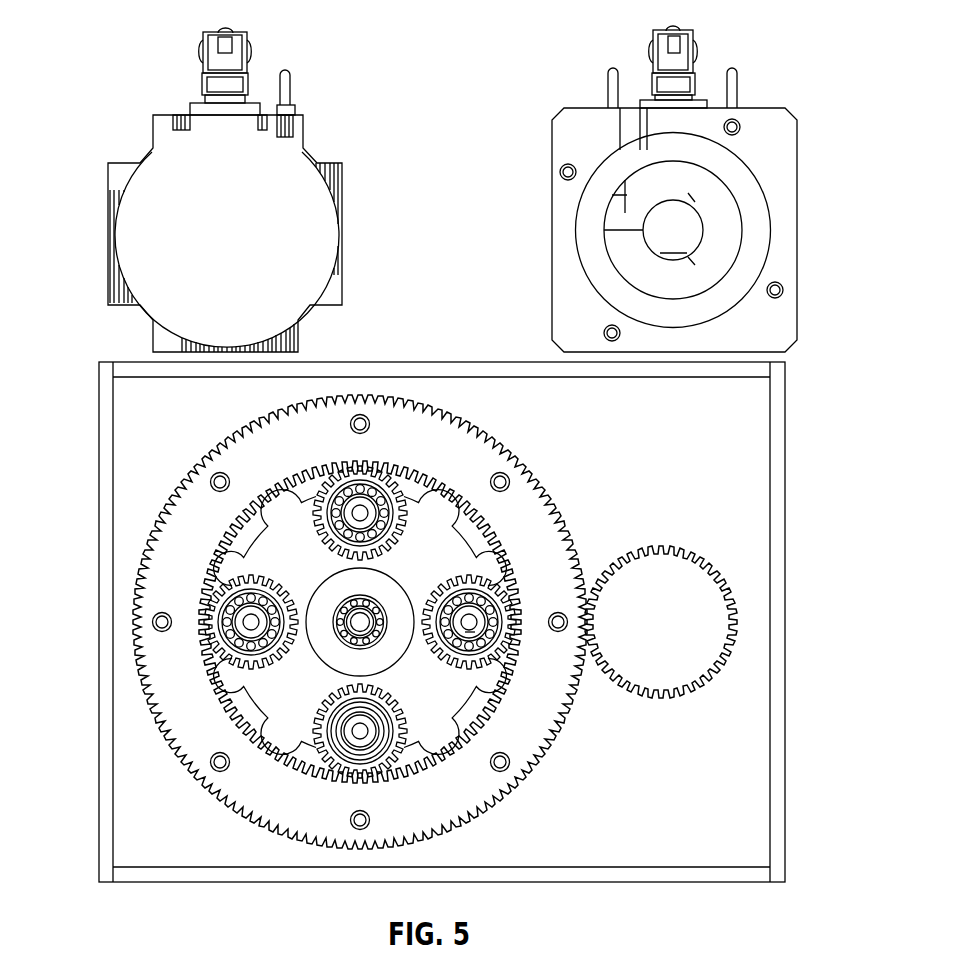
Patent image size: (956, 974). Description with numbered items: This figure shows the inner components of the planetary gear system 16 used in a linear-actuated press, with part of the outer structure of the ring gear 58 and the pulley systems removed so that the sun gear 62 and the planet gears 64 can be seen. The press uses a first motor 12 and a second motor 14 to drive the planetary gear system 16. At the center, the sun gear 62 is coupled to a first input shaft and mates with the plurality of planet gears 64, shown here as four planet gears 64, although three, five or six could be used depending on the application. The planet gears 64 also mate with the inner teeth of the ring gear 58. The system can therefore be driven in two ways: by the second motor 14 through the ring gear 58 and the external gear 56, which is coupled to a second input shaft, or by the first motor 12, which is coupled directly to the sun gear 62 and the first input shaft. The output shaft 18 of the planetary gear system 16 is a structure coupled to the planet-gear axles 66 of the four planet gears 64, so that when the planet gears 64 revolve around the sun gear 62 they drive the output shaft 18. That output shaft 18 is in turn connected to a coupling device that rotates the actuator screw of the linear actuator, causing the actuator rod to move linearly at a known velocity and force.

The first motor 12 is at (157, 153).
The second motor 14 is at (740, 213).
The planetary gear system 16 is at (172, 488).
The output shaft 18 is at (443, 698).
The external gear 56 is at (712, 600).
The ring gear 58 is at (177, 657).
The sun gear 62 is at (340, 653).
The planet gears 64 is at (320, 502).
The planet-gear axles 66 is at (513, 650).